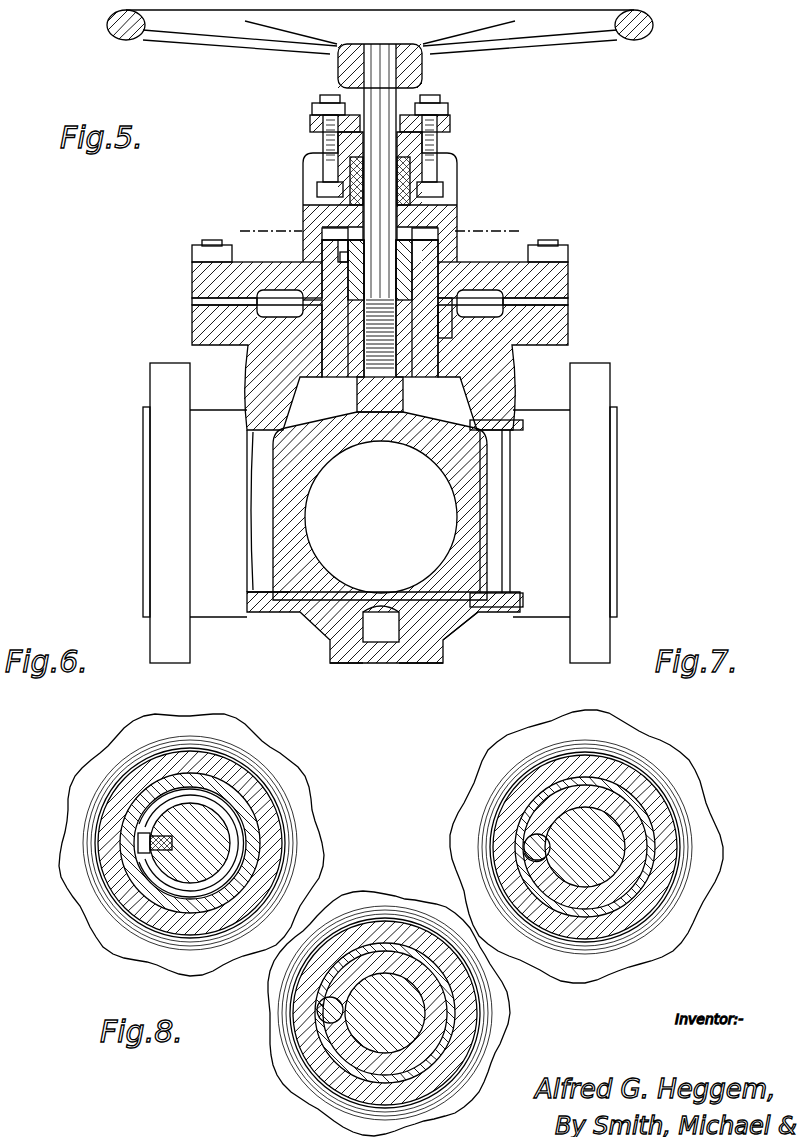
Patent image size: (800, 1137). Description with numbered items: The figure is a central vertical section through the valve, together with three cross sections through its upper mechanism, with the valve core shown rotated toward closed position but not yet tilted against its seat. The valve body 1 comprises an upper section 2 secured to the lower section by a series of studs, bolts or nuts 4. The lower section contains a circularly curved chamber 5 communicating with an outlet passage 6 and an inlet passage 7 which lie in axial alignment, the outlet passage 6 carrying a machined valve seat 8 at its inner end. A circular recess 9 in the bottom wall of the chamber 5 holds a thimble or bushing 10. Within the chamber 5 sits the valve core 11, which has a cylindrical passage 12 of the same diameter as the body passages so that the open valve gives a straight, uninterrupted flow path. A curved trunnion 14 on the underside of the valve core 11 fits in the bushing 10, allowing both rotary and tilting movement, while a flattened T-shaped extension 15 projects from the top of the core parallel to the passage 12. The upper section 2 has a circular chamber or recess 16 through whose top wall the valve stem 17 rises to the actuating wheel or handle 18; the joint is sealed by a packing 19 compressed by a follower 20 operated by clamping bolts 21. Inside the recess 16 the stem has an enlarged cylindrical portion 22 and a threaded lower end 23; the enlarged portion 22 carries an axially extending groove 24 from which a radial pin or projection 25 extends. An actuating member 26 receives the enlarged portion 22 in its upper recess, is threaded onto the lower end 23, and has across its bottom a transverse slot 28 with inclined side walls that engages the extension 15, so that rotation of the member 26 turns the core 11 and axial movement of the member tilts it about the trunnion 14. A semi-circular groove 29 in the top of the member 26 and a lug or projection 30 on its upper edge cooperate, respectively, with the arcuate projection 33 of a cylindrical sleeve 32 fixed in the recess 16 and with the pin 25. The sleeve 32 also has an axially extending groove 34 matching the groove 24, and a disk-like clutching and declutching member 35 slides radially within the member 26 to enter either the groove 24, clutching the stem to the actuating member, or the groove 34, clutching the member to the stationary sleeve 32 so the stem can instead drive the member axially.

In FIG. 5, the valve body 1 is at (614, 380).
In FIG. 5, the upper section 2 is at (583, 279).
In FIG. 6, the upper section 2 is at (305, 844).
In FIG. 7, the upper section 2 is at (690, 890).
In FIG. 8, the upper section 2 is at (490, 1017).
In FIG. 5, the studs, bolts or nuts 4 is at (205, 250).
In FIG. 5, the circularly curved chamber 5 is at (541, 604).
In FIG. 5, the outlet passage 6 is at (513, 648).
In FIG. 5, the inlet passage 7 is at (252, 606).
In FIG. 5, the valve seat 8 is at (494, 425).
In FIG. 5, the circular recess 9 is at (358, 656).
In FIG. 5, the thimble or bushing 10 is at (416, 656).
In FIG. 5, the valve core 11 is at (446, 426).
In FIG. 5, the passage 12 is at (381, 517).
In FIG. 5, the trunnion 14 is at (381, 644).
In FIG. 5, the flattened extension 15 is at (392, 392).
In FIG. 5, the chamber or recess 16 is at (452, 212).
In FIG. 5, the valve stem 17 is at (383, 99).
In FIG. 5, the valve actuating wheel or handle 18 is at (552, 22).
In FIG. 5, the packing 19 is at (410, 181).
In FIG. 5, the follower 20 is at (440, 120).
In FIG. 5, the clamping bolts 21 is at (328, 160).
In FIG. 5, the enlarged cylindrical portion 22 is at (430, 262).
In FIG. 6, the enlarged cylindrical portion 22 is at (240, 828).
In FIG. 7, the enlarged cylindrical portion 22 is at (658, 792).
In FIG. 8, the enlarged cylindrical portion 22 is at (396, 962).
In FIG. 5, the threaded lower end 23 is at (445, 328).
In FIG. 5, the axially extending groove 24 is at (342, 256).
In FIG. 8, the axially extending groove 24 is at (317, 1008).
In FIG. 5, the pin or projection 25 is at (342, 247).
In FIG. 6, the pin or projection 25 is at (150, 843).
In FIG. 5, the actuating member 26 is at (440, 270).
In FIG. 6, the actuating member 26 is at (184, 790).
In FIG. 7, the actuating member 26 is at (665, 815).
In FIG. 8, the actuating member 26 is at (446, 996).
In FIG. 5, the transverse slot 28 is at (400, 340).
In FIG. 6, the semi-circular groove 29 is at (240, 873).
In FIG. 6, the lug or projection 30 is at (140, 888).
In FIG. 8, the lug or projection 30 is at (286, 1050).
In FIG. 5, the cylindrical sleeve 32 is at (318, 322).
In FIG. 7, the cylindrical sleeve 32 is at (672, 843).
In FIG. 8, the cylindrical sleeve 32 is at (462, 1035).
In FIG. 5, the arcuate projection 33 is at (420, 236).
In FIG. 6, the arcuate projection 33 is at (215, 805).
In FIG. 5, the axially extending groove 34 is at (380, 303).
In FIG. 6, the axially extending groove 34 is at (140, 850).
In FIG. 7, the axially extending groove 34 is at (530, 856).
In FIG. 7, the clutching and declutching member 35 is at (524, 842).